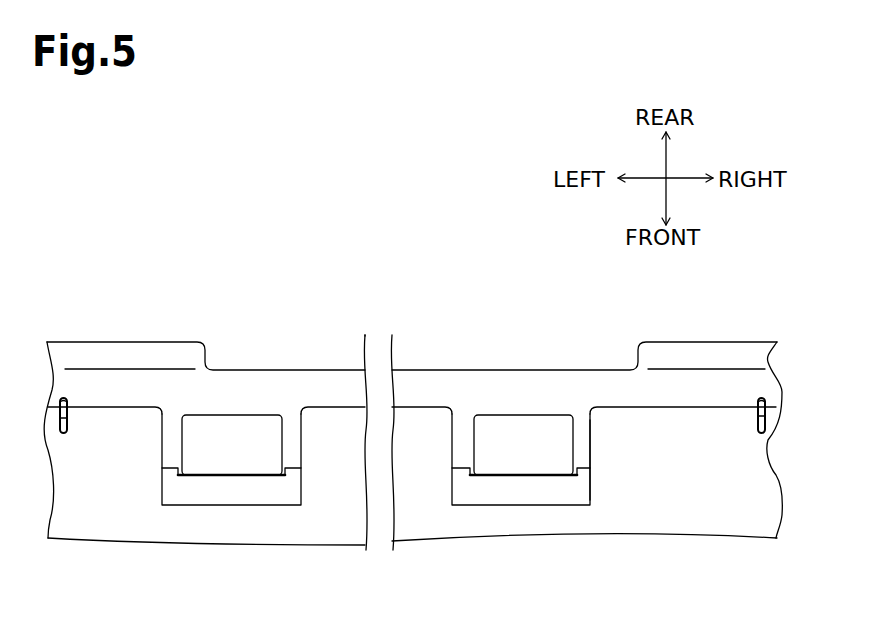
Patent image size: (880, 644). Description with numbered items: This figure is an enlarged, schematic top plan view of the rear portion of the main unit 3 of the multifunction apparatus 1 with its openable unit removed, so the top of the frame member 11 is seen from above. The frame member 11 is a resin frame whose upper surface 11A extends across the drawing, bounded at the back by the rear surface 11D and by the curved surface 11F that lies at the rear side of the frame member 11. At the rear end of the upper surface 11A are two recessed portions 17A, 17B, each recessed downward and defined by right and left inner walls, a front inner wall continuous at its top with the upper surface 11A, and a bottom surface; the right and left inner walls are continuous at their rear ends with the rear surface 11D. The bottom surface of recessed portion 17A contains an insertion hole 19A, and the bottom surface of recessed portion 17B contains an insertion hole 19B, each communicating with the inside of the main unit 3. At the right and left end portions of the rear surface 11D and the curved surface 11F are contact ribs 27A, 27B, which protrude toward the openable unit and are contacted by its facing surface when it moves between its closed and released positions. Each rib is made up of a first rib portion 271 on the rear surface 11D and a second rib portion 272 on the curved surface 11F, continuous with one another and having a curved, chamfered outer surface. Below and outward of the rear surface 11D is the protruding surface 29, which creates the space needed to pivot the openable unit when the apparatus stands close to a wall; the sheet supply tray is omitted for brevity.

The multifunction apparatus 1 is at (328, 300).
The main unit 3 is at (422, 385).
The frame member 11 is at (748, 518).
The upper surface 11A is at (642, 508).
The rear surface 11D is at (658, 407).
The curved surface 11F is at (615, 433).
The recessed portion 17A is at (502, 505).
The recessed portion 17B is at (192, 507).
The insertion hole 19A is at (513, 417).
The insertion hole 19B is at (233, 417).
The contact rib 27A is at (755, 437).
The contact rib 27B is at (67, 437).
The first rib portion 271 is at (67, 403).
The second rib portion 272 is at (67, 418).
The protruding surface 29 is at (126, 360).